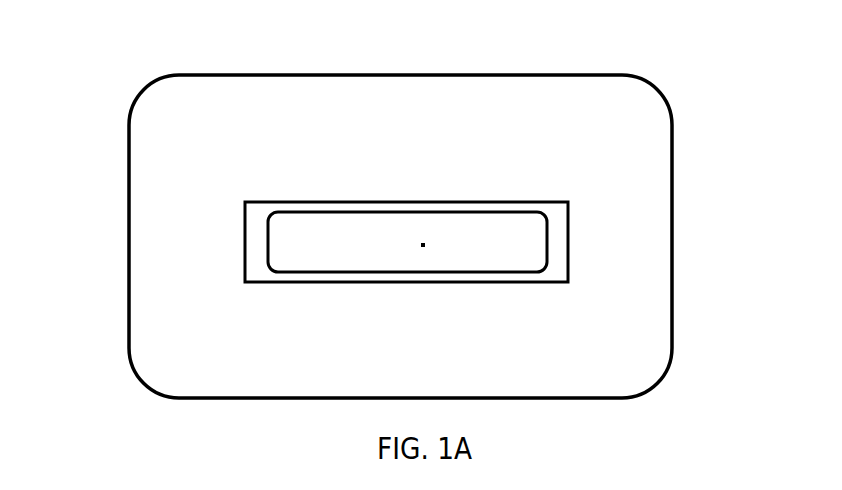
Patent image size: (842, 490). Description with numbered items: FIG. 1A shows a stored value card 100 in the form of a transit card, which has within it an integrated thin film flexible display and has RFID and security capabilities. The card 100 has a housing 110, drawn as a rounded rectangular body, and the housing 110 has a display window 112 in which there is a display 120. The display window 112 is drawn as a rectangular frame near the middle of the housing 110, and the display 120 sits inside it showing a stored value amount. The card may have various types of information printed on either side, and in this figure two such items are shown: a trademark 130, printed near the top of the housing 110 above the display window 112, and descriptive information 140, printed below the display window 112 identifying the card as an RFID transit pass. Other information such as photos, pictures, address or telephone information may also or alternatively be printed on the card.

The card 100 is at (738, 73).
The housing 110 is at (630, 127).
The display window 112 is at (555, 215).
The display 120 is at (292, 243).
The trademark 130 is at (223, 142).
The descriptive information 140 is at (248, 335).